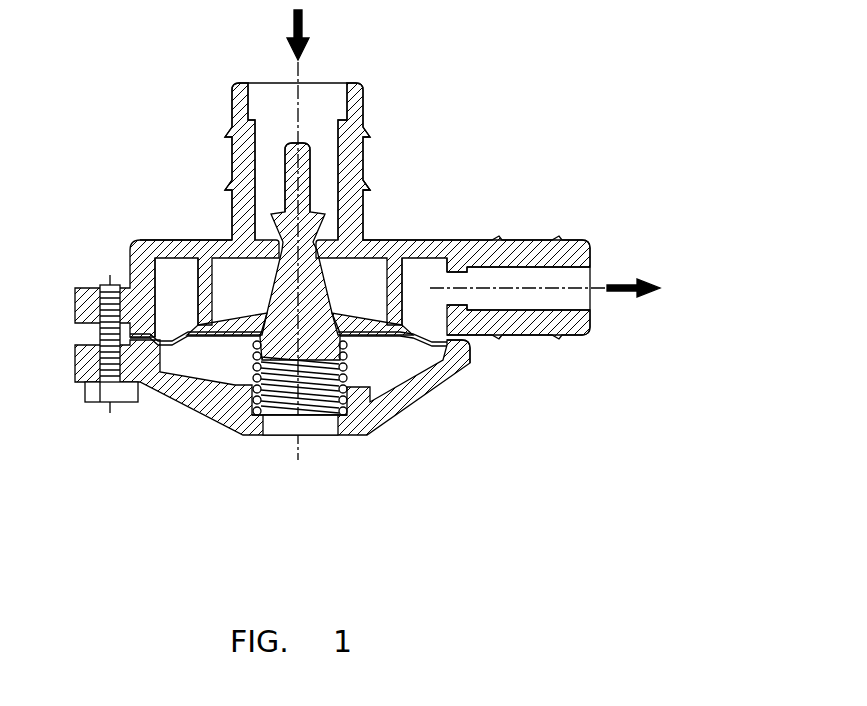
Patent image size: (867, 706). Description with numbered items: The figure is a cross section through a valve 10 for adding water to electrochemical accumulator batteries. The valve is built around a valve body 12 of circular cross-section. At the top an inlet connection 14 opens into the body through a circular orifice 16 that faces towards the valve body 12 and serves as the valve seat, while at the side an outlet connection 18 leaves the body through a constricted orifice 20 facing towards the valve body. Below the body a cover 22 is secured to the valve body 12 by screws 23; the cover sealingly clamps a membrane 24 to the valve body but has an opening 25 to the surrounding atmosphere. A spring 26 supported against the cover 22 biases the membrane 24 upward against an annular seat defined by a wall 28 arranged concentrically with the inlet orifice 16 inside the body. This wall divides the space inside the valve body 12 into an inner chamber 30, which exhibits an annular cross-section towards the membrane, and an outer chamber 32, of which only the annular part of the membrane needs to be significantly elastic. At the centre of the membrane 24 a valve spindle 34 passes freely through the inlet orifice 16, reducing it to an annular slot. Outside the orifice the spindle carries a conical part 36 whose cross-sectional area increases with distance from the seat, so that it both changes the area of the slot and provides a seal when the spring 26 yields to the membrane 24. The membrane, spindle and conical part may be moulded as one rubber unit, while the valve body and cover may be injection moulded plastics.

The valve 10 is at (367, 257).
The valve body 12 is at (395, 290).
The inlet connection 14 is at (353, 160).
The circular orifice 16 is at (366, 192).
The outlet connection 18 is at (508, 253).
The constricted orifice 20 is at (490, 337).
The cover 22 is at (460, 363).
The screws 23 is at (102, 404).
The membrane 24 is at (413, 337).
The opening 25 is at (195, 398).
The spring 26 is at (337, 432).
The wall 28 is at (153, 250).
The inner chamber 30 is at (231, 304).
The outer chamber 32 is at (164, 320).
The valve spindle 34 is at (282, 285).
The conical part 36 is at (290, 218).